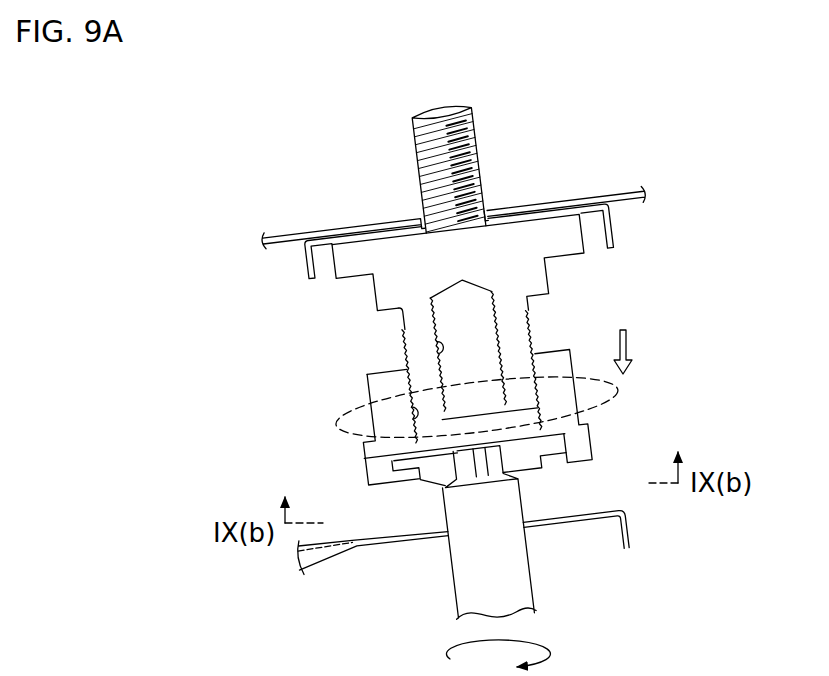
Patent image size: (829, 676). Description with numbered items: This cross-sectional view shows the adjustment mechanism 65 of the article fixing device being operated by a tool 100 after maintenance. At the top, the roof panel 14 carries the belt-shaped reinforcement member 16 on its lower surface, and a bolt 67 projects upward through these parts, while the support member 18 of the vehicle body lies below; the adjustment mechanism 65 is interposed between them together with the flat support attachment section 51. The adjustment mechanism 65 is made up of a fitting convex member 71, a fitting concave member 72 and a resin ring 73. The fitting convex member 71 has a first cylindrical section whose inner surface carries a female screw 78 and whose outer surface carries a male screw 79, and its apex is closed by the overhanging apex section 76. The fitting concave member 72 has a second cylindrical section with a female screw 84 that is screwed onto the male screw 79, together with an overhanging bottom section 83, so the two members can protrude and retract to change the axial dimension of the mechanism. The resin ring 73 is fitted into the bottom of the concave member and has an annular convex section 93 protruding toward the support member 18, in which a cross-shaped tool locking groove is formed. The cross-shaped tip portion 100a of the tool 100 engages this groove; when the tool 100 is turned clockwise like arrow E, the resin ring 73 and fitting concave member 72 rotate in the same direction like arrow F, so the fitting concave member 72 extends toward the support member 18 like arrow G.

The roof panel 14 is at (622, 198).
The reinforcement member 16 is at (590, 208).
The support member 18 is at (608, 502).
The support attachment section 51 is at (392, 531).
The adjustment mechanism 65 is at (603, 280).
The bolt 67 is at (472, 143).
The fitting convex member 71 is at (402, 332).
The fitting concave member 72 is at (367, 392).
The resin ring 73 is at (395, 458).
The overhanging apex section 76 is at (343, 272).
The female screw 78 is at (437, 356).
The male screw 79 is at (403, 365).
The overhanging bottom section 83 is at (593, 433).
The female screw 84 is at (417, 417).
The convex section 93 is at (432, 474).
The tool 100 is at (457, 602).
The tip portion 100a is at (500, 461).
The arrow E is at (552, 650).
The arrow F is at (583, 410).
The arrow G is at (632, 344).